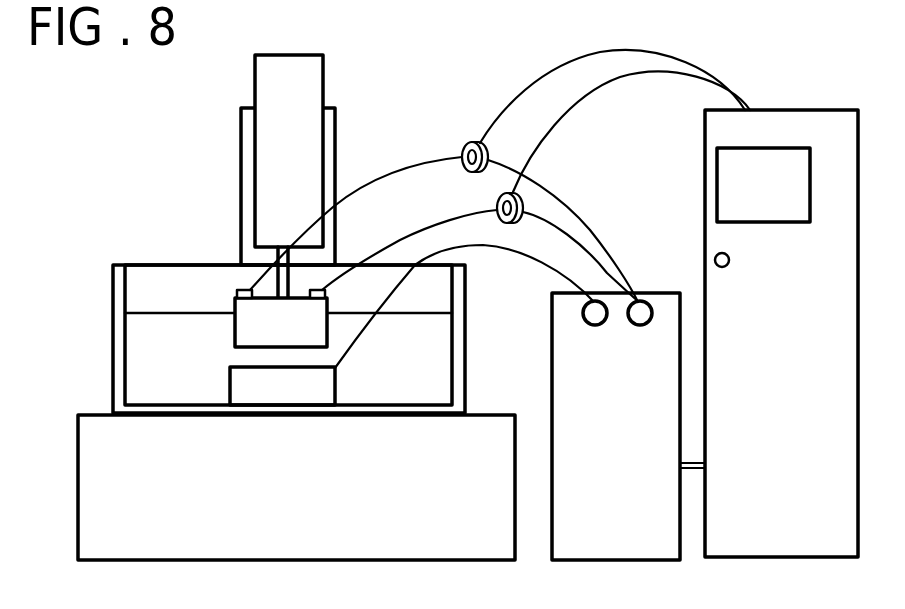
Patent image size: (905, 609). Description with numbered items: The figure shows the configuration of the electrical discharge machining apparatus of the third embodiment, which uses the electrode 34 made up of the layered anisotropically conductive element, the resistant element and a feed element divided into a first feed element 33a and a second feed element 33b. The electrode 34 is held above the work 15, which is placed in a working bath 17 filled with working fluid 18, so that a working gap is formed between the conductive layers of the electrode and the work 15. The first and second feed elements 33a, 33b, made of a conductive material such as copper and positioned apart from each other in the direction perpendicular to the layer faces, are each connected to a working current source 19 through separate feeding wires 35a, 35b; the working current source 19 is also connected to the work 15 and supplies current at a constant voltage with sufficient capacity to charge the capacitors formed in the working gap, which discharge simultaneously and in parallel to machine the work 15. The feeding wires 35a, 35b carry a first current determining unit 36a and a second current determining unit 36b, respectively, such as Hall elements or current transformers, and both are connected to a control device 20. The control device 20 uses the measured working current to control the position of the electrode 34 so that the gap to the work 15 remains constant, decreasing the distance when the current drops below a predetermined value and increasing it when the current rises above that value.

The work 15 is at (243, 393).
The working bath 17 is at (112, 290).
The working fluid 18 is at (140, 375).
The working current source 19 is at (655, 293).
The control device 20 is at (807, 110).
The first feed element 33a is at (244, 288).
The second feed element 33b is at (318, 288).
The electrode 34 is at (258, 332).
The feeding wire 35a is at (356, 187).
The feeding wire 35b is at (383, 243).
The first current determining unit 36a is at (477, 141).
The second current determining unit 36b is at (496, 194).